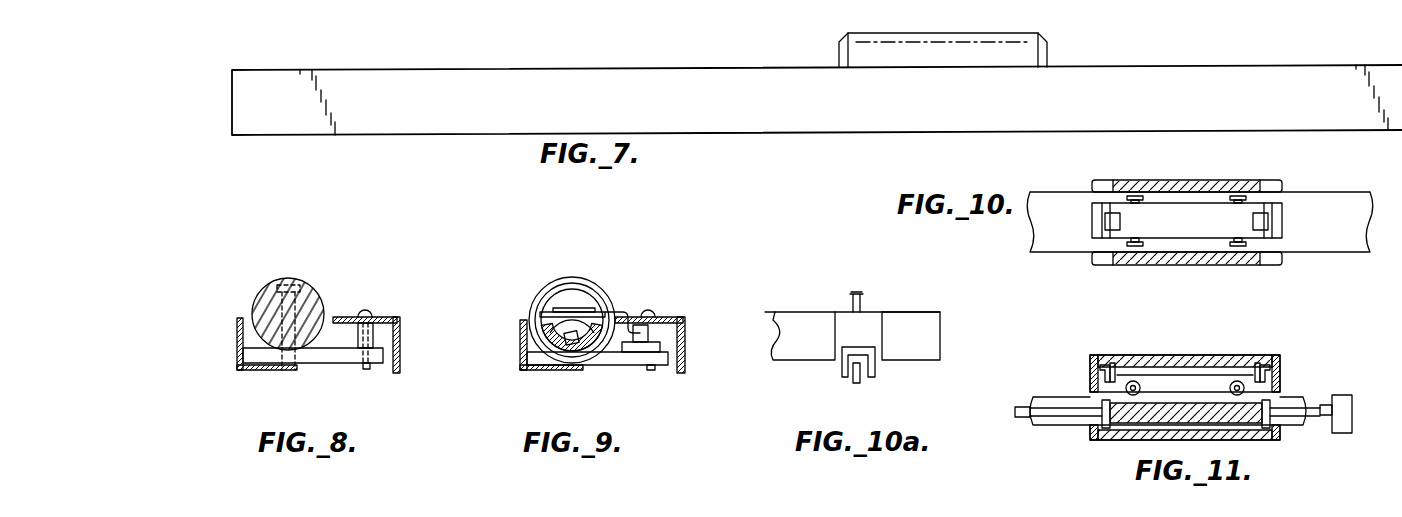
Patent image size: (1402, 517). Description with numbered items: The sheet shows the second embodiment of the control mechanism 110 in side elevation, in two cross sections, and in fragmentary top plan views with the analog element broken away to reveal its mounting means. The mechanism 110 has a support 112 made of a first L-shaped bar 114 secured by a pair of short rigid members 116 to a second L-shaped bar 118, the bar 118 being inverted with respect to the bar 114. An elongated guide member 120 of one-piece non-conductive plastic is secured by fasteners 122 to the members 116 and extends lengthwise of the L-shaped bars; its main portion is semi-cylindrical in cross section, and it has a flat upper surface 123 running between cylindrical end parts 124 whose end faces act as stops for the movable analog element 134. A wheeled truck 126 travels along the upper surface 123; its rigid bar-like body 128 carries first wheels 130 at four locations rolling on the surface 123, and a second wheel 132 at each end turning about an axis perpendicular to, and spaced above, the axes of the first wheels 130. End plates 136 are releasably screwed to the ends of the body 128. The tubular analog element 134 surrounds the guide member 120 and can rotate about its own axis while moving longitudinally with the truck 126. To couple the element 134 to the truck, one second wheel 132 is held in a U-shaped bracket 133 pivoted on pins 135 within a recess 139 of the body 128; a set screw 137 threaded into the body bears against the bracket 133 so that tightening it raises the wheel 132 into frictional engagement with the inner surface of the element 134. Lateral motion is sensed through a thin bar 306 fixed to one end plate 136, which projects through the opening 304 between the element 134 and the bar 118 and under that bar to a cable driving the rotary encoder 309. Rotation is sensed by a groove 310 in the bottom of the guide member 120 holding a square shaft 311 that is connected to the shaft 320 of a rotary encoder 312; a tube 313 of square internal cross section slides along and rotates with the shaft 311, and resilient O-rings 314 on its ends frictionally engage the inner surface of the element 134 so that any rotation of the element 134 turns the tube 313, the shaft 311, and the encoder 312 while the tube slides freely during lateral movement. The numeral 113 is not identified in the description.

In FIG. 7, the control mechanism 110 is at (817, 67).
In FIG. 8, the control mechanism 110 is at (322, 324).
In FIG. 9, the control mechanism 110 is at (599, 332).
In FIG. 10, the control mechanism 110 is at (1176, 217).
In FIG. 11, the control mechanism 110 is at (1182, 399).
In FIG. 8, the support 112 is at (285, 371).
In FIG. 9, the right bracket 113 is at (685, 365).
In FIG. 8, the first L-shaped bar 114 is at (258, 372).
In FIG. 9, the first L-shaped bar 114 is at (540, 370).
In FIG. 8, the short rigid members 116 is at (323, 358).
In FIG. 9, the short rigid members 116 is at (617, 357).
In FIG. 7, the second L-shaped bar 118 is at (1168, 77).
In FIG. 8, the second L-shaped bar 118 is at (400, 357).
In FIG. 8, the guide member 120 is at (322, 336).
In FIG. 9, the guide member 120 is at (599, 345).
In FIG. 10, the guide member 120 is at (1176, 195).
In FIG. 11, the guide member 120 is at (1147, 406).
In FIG. 8, the fasteners 122 is at (292, 285).
In FIG. 10A, the flat upper surface 123 is at (843, 361).
In FIG. 10, the flat upper surface 123 is at (1067, 152).
In FIG. 11, the flat upper surface 123 is at (1033, 397).
In FIG. 8, the cylindrical end parts 124 is at (307, 285).
In FIG. 10A, the wheeled truck 126 is at (843, 339).
In FIG. 10, the wheeled truck 126 is at (1188, 221).
In FIG. 10, the bar-like body 128 is at (1192, 229).
In FIG. 10, the first wheels 130 is at (1295, 178).
In FIG. 11, the first wheels 130 is at (1127, 392).
In FIG. 10A, the second wheel 132 is at (855, 384).
In FIG. 10, the second wheel 132 is at (1105, 220).
In FIG. 11, the second wheel 132 is at (1112, 363).
In FIG. 10A, the U-shaped bracket 133 is at (873, 368).
In FIG. 7, the analog element 134 is at (951, 33).
In FIG. 9, the analog element 134 is at (584, 278).
In FIG. 10, the analog element 134 is at (1248, 179).
In FIG. 11, the analog element 134 is at (1167, 354).
In FIG. 10A, the pins 135 is at (878, 352).
In FIG. 9, the end plates 136 is at (568, 302).
In FIG. 11, the end plates 136 is at (1093, 370).
In FIG. 10A, the set screw 137 is at (862, 292).
In FIG. 10A, the recess 139 is at (835, 350).
In FIG. 9, the opening 304 is at (607, 348).
In FIG. 9, the thin bar 306 is at (610, 310).
In FIG. 9, the rotary encoder 309 is at (660, 345).
In FIG. 9, the groove 310 is at (557, 338).
In FIG. 9, the shaft 311 is at (583, 343).
In FIG. 11, the shaft 311 is at (1023, 408).
In FIG. 11, the rotary encoder 312 is at (1340, 395).
In FIG. 11, the tube 313 is at (1152, 415).
In FIG. 11, the O-rings 314 is at (1105, 437).
In FIG. 11, the encoder shaft 320 is at (1330, 428).